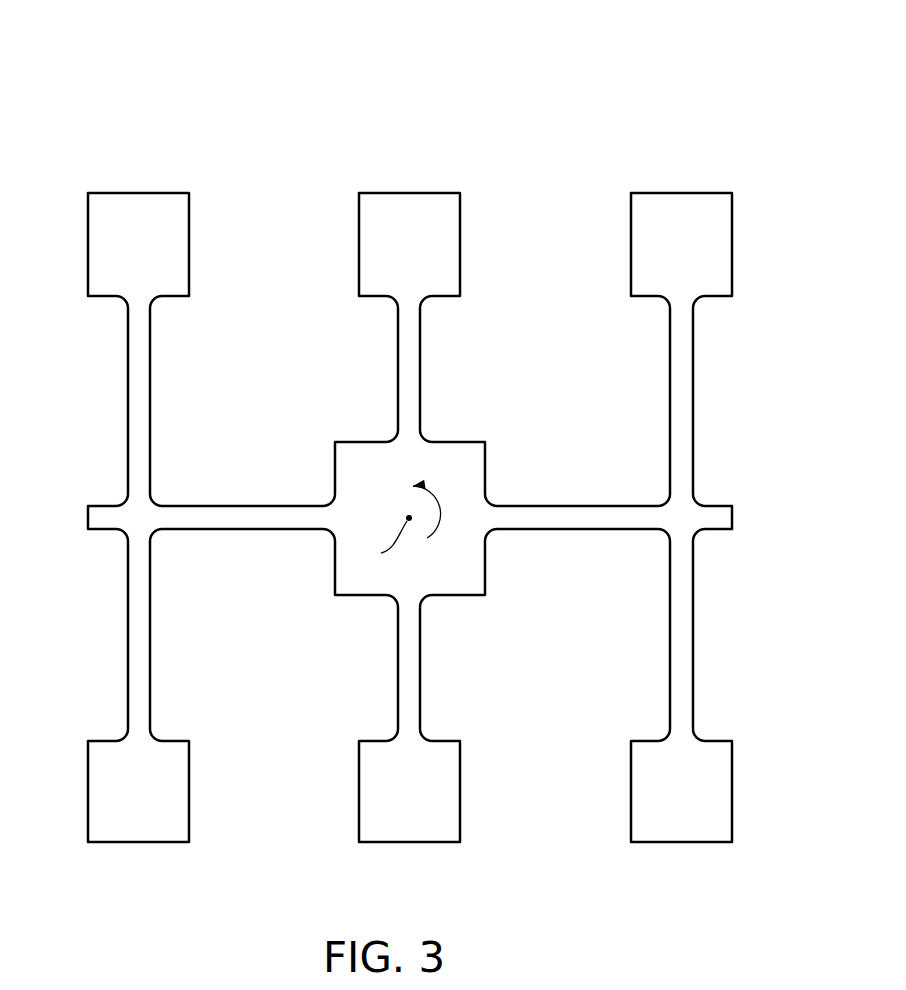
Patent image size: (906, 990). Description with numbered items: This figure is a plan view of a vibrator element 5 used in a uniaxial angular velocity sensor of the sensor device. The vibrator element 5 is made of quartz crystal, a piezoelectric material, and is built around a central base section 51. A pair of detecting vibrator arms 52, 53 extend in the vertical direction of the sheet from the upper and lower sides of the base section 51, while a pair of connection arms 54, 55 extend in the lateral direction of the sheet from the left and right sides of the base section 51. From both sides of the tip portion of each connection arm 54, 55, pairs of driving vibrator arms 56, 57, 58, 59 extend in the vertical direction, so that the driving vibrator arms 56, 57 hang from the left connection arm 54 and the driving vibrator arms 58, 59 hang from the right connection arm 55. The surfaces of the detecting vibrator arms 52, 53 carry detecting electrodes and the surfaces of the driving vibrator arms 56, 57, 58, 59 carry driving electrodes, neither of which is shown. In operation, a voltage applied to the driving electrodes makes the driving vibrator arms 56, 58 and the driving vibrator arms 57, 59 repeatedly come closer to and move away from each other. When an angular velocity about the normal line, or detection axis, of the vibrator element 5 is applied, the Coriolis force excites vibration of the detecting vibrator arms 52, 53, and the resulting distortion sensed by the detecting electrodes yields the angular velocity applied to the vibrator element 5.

The vibrator element 5 is at (630, 100).
The base section 51 is at (462, 476).
The detecting vibrator arm 52 is at (421, 329).
The detecting vibrator arm 53 is at (398, 665).
The connection arm 54 is at (196, 506).
The connection arm 55 is at (606, 506).
The driving vibrator arm 56 is at (128, 360).
The driving vibrator arm 57 is at (128, 665).
The driving vibrator arm 58 is at (693, 386).
The driving vibrator arm 59 is at (693, 634).